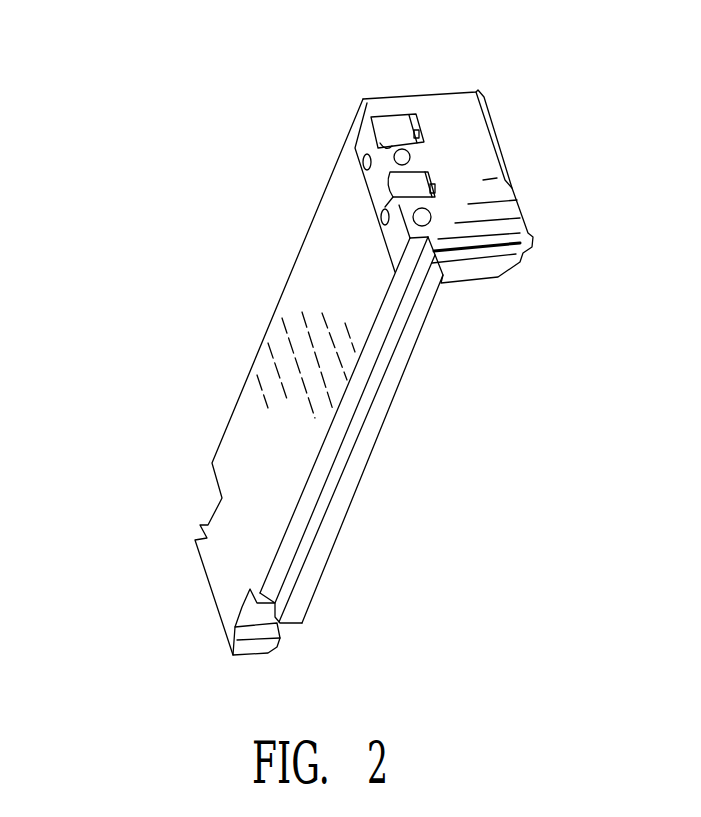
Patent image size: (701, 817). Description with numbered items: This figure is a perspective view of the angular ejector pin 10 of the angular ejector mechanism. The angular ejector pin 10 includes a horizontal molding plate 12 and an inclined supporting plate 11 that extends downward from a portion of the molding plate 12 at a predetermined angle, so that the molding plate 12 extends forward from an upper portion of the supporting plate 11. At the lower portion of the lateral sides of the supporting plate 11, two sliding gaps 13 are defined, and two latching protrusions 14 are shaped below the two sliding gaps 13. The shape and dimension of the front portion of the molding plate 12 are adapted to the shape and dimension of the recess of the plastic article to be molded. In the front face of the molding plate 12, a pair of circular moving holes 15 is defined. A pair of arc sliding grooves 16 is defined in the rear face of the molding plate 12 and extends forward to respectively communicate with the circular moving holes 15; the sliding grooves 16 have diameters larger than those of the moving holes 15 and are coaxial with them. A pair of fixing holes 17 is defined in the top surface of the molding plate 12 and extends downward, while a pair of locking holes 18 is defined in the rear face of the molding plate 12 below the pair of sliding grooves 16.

The angular ejector pin 10 is at (152, 167).
The supporting plate 11 is at (268, 372).
The molding plate 12 is at (505, 221).
The sliding gap 13 is at (248, 612).
The latching protrusion 14 is at (272, 642).
The circular moving hole 15 is at (432, 188).
The arc sliding groove 16 is at (397, 133).
The fixing hole 17 is at (428, 214).
The locking hole 18 is at (363, 160).